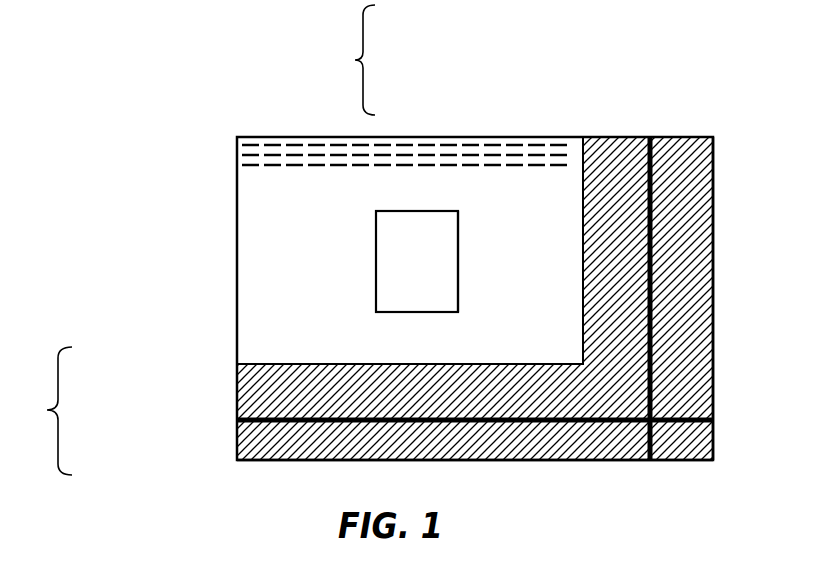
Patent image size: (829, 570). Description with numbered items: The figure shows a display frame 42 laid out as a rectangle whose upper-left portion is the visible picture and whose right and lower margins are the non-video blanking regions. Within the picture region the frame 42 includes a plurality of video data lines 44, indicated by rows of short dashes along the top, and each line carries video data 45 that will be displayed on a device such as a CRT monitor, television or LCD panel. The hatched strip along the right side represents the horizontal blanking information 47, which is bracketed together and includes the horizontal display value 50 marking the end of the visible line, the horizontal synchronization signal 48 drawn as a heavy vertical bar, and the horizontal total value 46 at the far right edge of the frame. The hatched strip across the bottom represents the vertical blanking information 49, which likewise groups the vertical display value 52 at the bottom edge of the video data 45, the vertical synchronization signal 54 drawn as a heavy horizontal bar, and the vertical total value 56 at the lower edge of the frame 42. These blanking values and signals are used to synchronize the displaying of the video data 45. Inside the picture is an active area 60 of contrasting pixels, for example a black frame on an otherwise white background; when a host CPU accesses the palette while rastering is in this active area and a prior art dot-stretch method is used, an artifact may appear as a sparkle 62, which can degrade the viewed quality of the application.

The display frame 42 is at (296, 470).
The video data lines 44 is at (230, 157).
The video data 45 is at (254, 298).
The horizontal total value 46 is at (707, 130).
The horizontal blanking information 47 is at (348, 60).
The horizontal synchronization signal 48 is at (645, 130).
The vertical blanking information 49 is at (42, 411).
The horizontal display value 50 is at (578, 130).
The vertical display value 52 is at (325, 370).
The vertical synchronization signal 54 is at (406, 420).
The vertical total value 56 is at (402, 459).
The active area 60 is at (373, 243).
The sparkle 62 is at (461, 231).